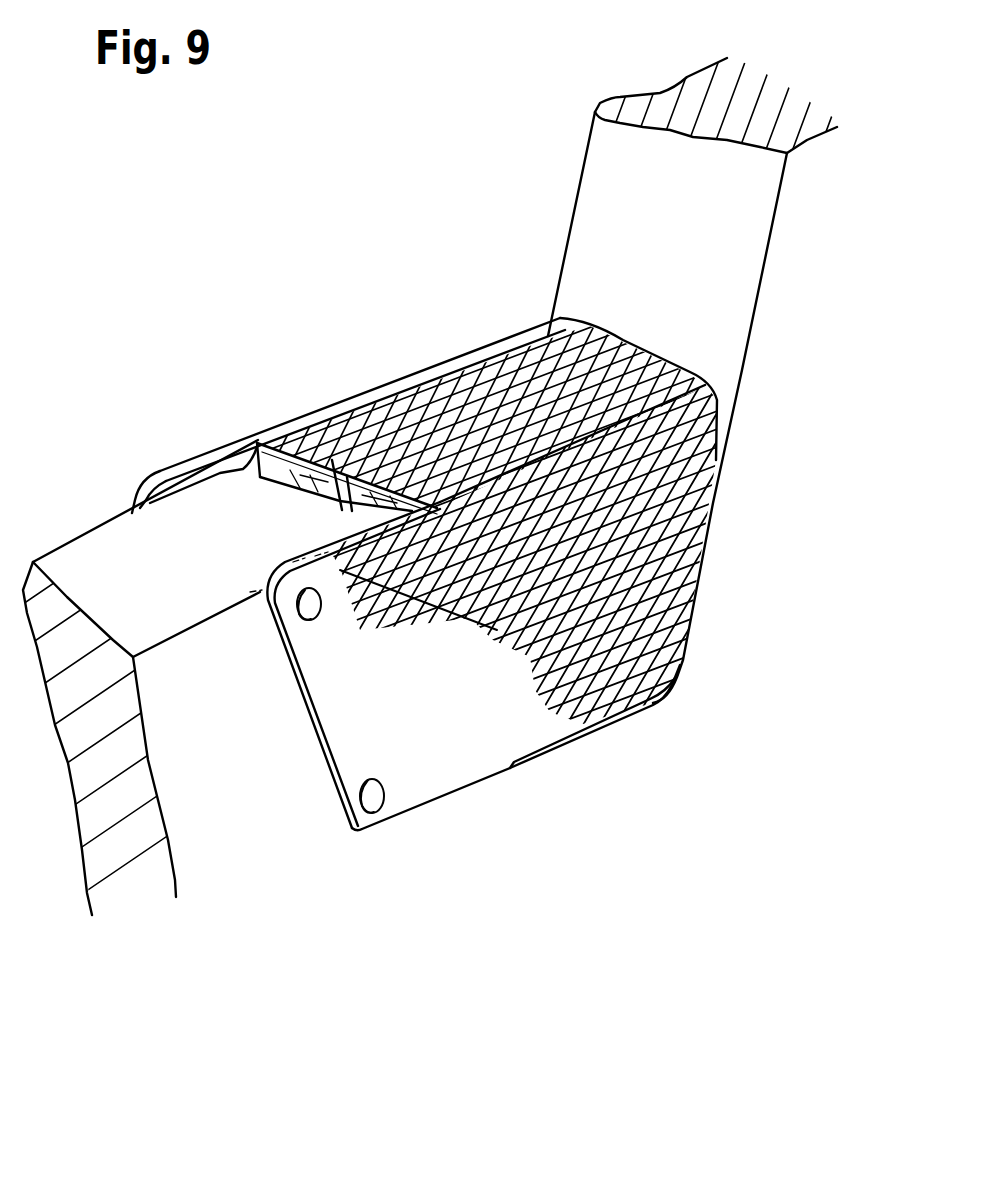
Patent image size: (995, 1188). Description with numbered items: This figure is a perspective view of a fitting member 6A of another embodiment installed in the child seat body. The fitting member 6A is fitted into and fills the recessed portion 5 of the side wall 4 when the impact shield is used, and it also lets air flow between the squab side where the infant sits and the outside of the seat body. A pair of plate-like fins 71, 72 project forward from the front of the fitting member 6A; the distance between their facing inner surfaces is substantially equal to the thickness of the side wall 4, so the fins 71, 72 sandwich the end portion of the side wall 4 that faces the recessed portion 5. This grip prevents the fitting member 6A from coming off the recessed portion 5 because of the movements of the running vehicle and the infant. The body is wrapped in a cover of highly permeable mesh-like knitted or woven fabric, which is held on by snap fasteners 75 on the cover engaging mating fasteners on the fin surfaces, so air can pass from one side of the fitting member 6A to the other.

The side wall 4 is at (217, 778).
The recessed portion 5 is at (430, 617).
The fitting member 6A is at (387, 307).
The fin 71 is at (402, 820).
The fin 72 is at (253, 447).
The snap fastener 75 is at (320, 617).